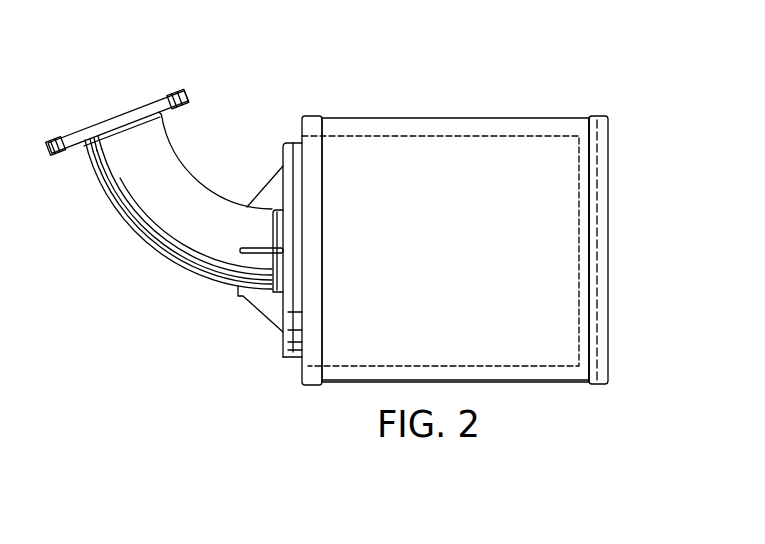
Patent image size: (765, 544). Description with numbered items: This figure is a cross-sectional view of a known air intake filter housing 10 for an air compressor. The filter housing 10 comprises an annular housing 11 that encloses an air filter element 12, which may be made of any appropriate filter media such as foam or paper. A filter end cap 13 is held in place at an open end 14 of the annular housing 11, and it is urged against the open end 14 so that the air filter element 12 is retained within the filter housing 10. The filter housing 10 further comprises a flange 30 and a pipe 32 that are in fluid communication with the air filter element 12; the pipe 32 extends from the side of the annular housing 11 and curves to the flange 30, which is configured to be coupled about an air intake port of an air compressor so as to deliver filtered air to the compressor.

The air intake filter housing 10 is at (390, 80).
The annular housing 11 is at (442, 117).
The air filter element 12 is at (533, 366).
The filter end cap 13 is at (607, 153).
The open end 14 is at (588, 128).
The flange 30 is at (167, 91).
The pipe 32 is at (121, 212).